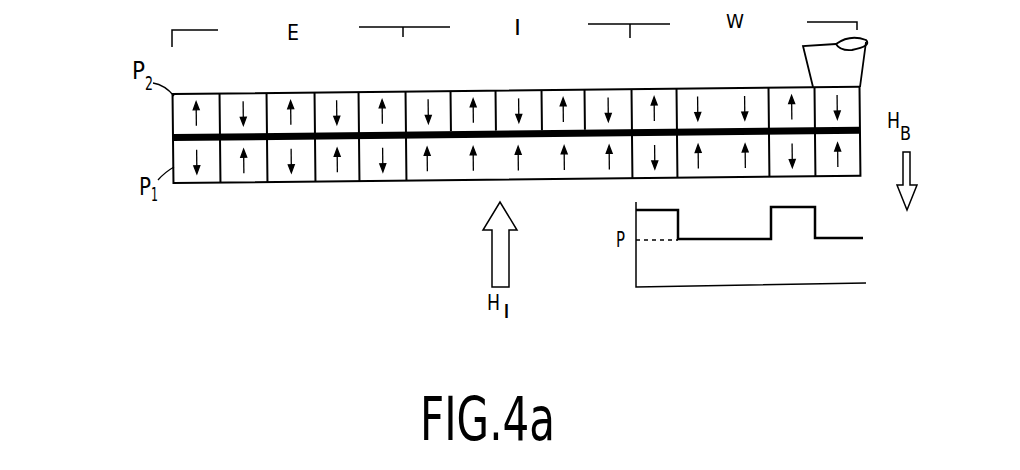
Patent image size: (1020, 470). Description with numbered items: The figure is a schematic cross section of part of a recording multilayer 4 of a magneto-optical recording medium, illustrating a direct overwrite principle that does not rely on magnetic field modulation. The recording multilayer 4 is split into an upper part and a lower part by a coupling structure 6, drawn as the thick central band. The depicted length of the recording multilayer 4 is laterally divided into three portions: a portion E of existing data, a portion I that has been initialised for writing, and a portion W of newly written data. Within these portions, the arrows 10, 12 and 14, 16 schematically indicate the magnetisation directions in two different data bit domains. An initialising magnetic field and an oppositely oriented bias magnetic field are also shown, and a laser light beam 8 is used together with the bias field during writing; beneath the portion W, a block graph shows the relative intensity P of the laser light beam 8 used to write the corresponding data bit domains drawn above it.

The recording multilayer 4 is at (97, 183).
The coupling structure 6 is at (175, 139).
The laser light beam 8 is at (822, 60).
The arrow 10 is at (198, 119).
The arrow 12 is at (197, 152).
The arrow 14 is at (337, 118).
The arrow 16 is at (337, 153).